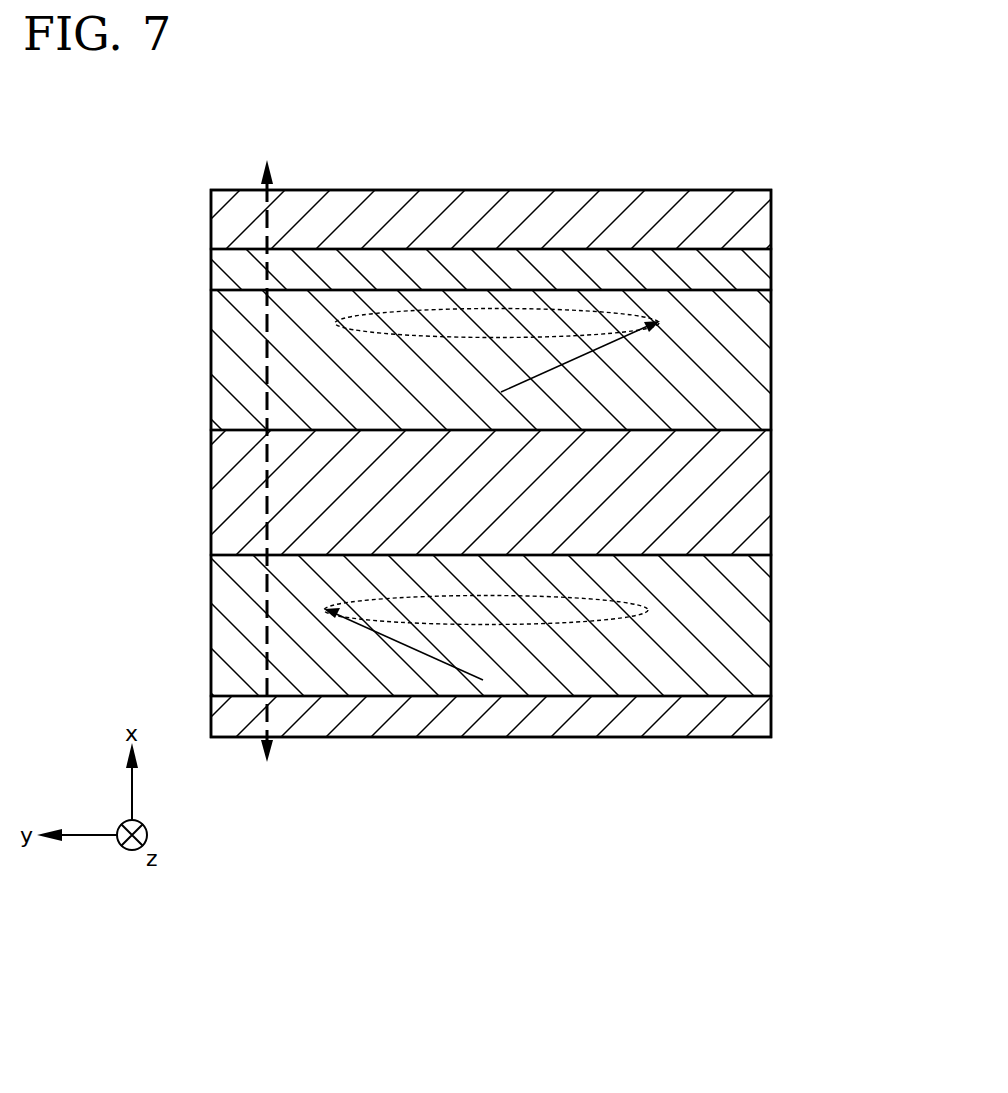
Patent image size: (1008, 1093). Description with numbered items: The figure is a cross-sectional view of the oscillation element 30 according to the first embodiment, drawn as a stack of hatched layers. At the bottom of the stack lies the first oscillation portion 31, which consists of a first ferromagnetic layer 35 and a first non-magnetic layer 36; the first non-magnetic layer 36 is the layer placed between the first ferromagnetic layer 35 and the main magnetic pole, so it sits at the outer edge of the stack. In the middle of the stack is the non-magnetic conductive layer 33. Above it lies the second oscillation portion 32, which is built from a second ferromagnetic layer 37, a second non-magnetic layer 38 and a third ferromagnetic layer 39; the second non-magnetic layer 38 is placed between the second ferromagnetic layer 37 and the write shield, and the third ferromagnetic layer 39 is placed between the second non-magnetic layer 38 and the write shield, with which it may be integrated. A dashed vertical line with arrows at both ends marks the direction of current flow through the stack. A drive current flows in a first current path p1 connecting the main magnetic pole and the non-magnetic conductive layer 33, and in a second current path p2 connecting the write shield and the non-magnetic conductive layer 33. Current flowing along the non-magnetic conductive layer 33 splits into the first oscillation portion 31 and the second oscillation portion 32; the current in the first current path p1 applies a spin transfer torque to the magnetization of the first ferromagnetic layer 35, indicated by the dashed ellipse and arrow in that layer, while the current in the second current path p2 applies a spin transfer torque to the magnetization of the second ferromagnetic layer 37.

The oscillation element 30 is at (764, 140).
The first oscillation portion 31 is at (837, 615).
The second oscillation portion 32 is at (837, 202).
The non-magnetic conductive layer 33 is at (755, 498).
The first ferromagnetic layer 35 is at (755, 633).
The first non-magnetic layer 36 is at (757, 715).
The second ferromagnetic layer 37 is at (755, 352).
The second non-magnetic layer 38 is at (760, 265).
The third ferromagnetic layer 39 is at (760, 218).
The first current path p1 is at (267, 616).
The second current path p2 is at (267, 353).